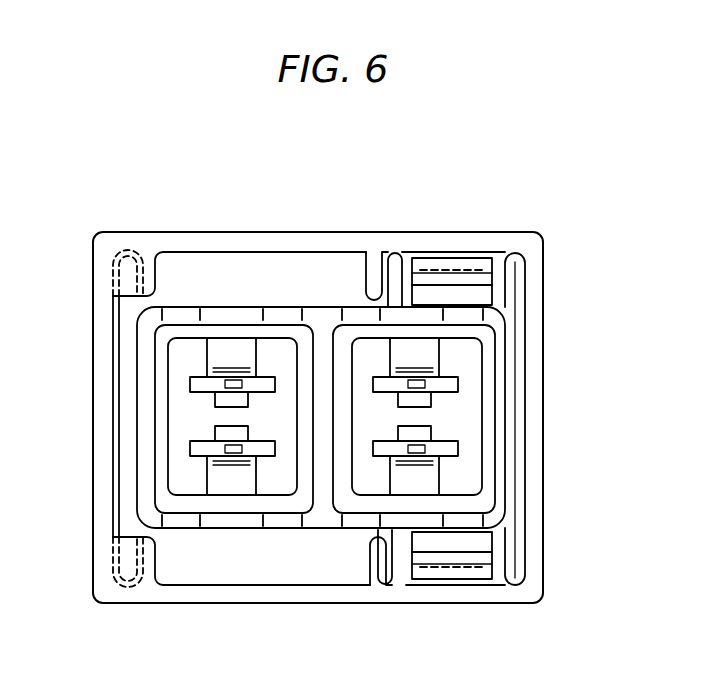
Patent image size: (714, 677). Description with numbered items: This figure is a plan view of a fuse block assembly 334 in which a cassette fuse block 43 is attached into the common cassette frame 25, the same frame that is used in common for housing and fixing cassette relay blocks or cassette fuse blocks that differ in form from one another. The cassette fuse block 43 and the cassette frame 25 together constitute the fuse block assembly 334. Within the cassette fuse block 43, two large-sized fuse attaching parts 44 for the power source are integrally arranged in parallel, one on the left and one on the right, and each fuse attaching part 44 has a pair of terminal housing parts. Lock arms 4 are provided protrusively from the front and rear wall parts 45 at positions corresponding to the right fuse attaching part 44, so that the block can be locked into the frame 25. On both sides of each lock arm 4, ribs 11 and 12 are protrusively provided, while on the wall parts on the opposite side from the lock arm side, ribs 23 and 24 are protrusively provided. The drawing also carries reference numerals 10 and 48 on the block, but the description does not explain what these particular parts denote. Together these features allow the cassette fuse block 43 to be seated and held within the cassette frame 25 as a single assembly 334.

The fuse block assembly 334 is at (619, 202).
The cassette frame 25 is at (231, 226).
The rib 24 is at (172, 256).
The rib 12 is at (128, 281).
The rib 23 is at (363, 252).
The rib 11 is at (396, 256).
The terminal receiving cavity 10 is at (469, 262).
The lock arm 4 is at (443, 260).
The wall part 45 is at (455, 306).
The cassette fuse block 43 is at (294, 294).
The fuse attaching part 44 is at (360, 510).
The contact pins 48 is at (232, 436).